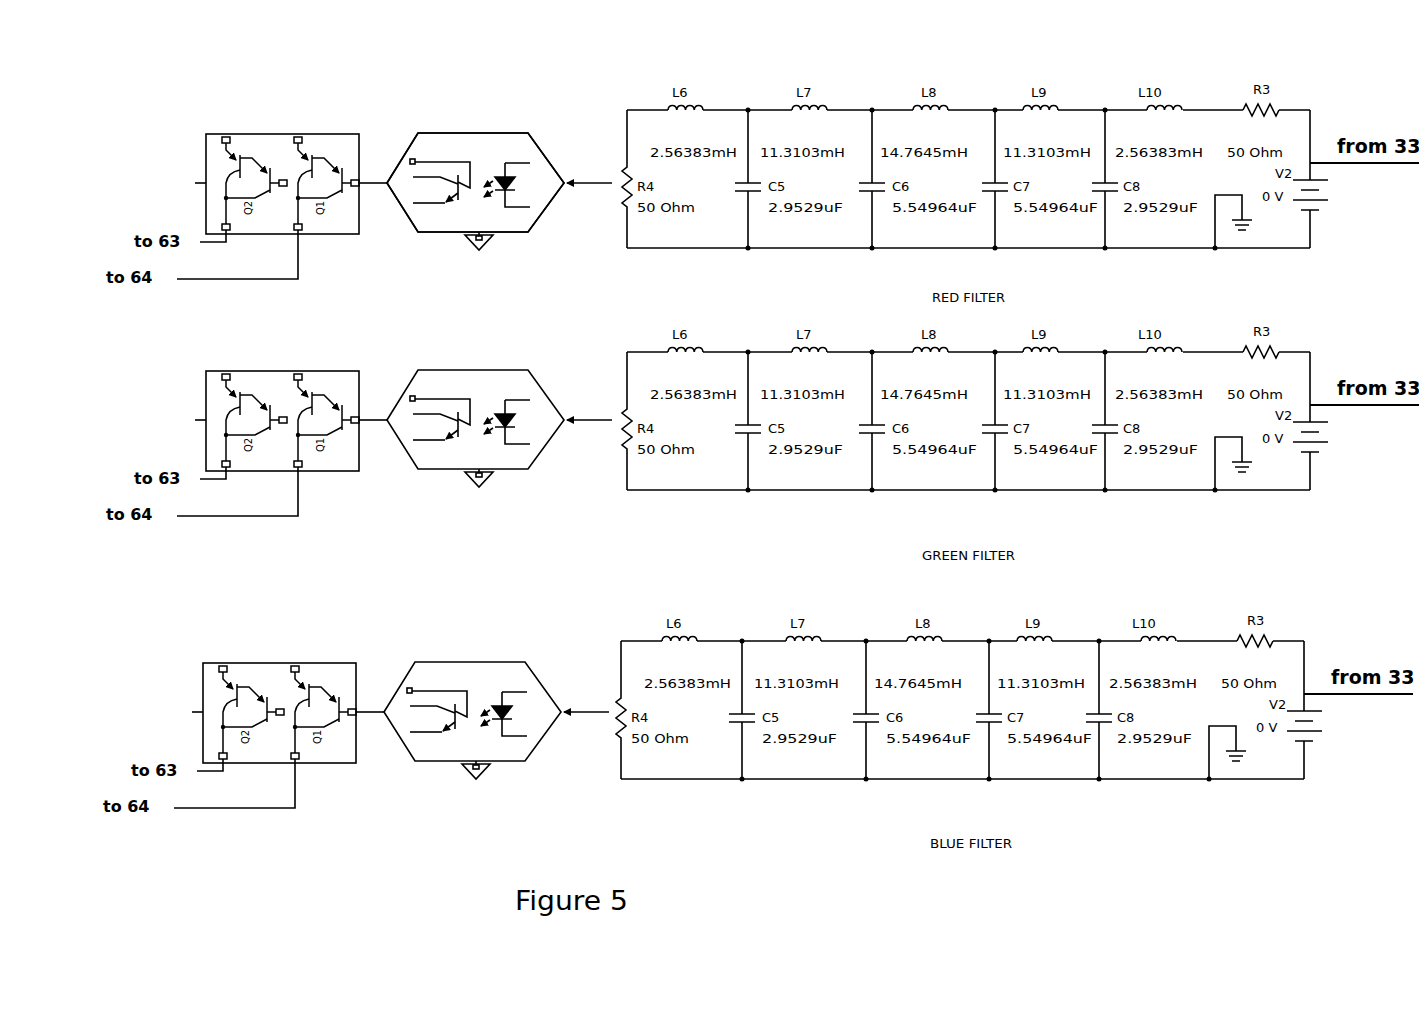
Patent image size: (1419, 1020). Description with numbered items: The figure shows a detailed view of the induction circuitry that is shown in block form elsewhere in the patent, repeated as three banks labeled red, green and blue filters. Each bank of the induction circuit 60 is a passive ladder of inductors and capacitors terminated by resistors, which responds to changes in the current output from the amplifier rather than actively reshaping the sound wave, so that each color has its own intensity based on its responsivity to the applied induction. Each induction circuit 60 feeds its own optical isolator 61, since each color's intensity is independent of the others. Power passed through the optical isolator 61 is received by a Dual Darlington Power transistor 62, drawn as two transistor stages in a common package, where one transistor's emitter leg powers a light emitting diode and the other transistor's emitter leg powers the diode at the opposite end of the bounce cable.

The induction circuit 60 is at (975, 78).
The optical isolator 61 is at (475, 110).
The Dual Darlington Power transistor 62 is at (288, 111).